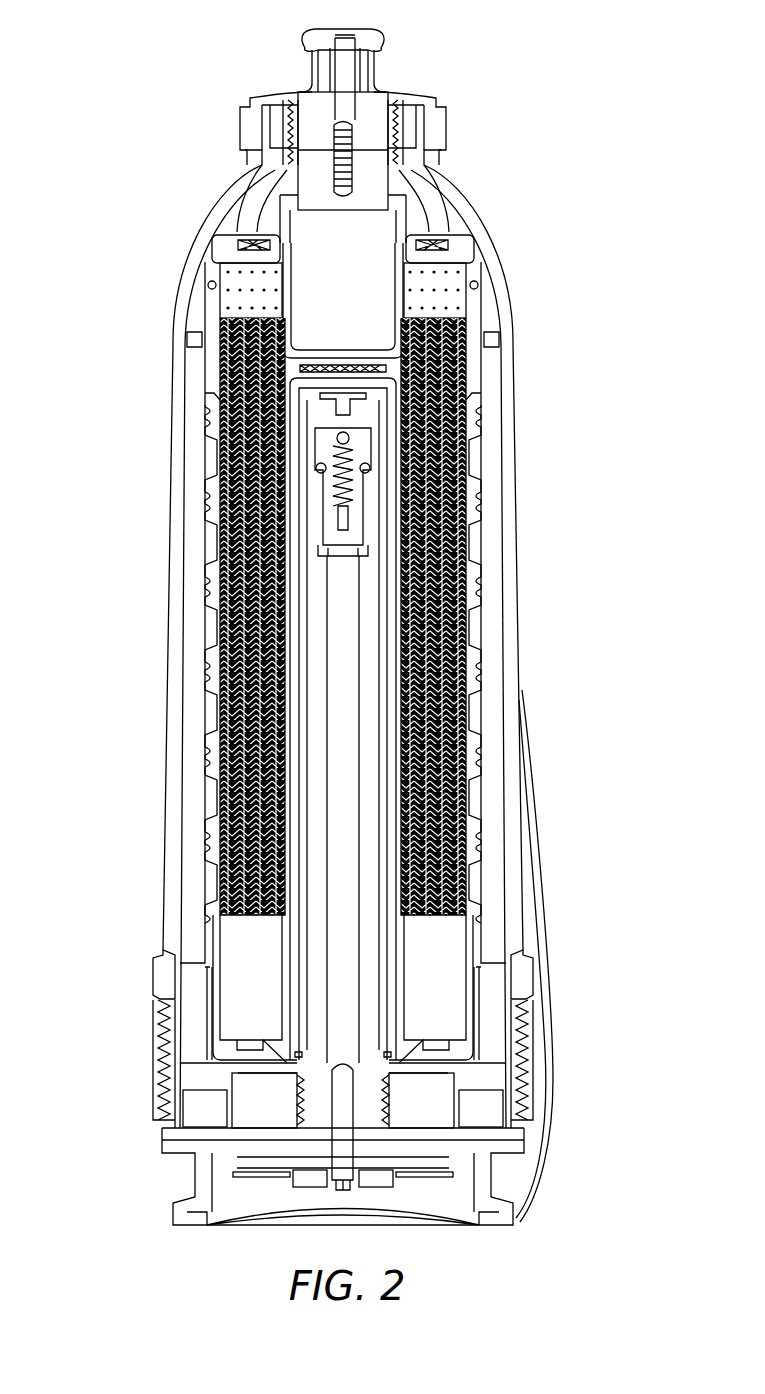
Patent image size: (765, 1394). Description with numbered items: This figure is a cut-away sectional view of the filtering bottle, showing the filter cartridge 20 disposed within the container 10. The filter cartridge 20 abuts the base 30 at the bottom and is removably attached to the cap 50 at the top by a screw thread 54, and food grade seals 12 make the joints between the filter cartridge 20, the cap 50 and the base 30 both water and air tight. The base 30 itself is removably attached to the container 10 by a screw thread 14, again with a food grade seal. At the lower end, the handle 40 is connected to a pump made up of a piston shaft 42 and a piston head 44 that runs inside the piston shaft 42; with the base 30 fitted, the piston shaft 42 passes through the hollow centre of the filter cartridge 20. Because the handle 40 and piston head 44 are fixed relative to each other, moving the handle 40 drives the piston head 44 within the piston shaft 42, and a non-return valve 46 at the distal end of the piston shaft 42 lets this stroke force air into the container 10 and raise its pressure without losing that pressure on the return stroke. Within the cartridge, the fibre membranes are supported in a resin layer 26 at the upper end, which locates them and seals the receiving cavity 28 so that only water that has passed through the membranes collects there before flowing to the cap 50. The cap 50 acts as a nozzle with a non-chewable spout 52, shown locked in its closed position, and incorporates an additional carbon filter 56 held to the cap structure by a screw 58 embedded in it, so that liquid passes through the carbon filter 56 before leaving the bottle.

The container 10 is at (171, 664).
The food grade seals 12 is at (262, 242).
The screw thread 14 is at (153, 1000).
The filter cartridge 20 is at (230, 770).
The resin layer 26 is at (236, 298).
The receiving cavity 28 is at (359, 305).
The base 30 is at (155, 1078).
The handle 40 is at (188, 1228).
The piston shaft 42 is at (384, 610).
The piston head 44 is at (343, 687).
The non-return valve 46 is at (342, 392).
The cap 50 is at (392, 95).
The spout 52 is at (380, 45).
The screw thread 54 is at (288, 122).
The carbon filter 56 is at (372, 204).
The screw 58 is at (354, 134).